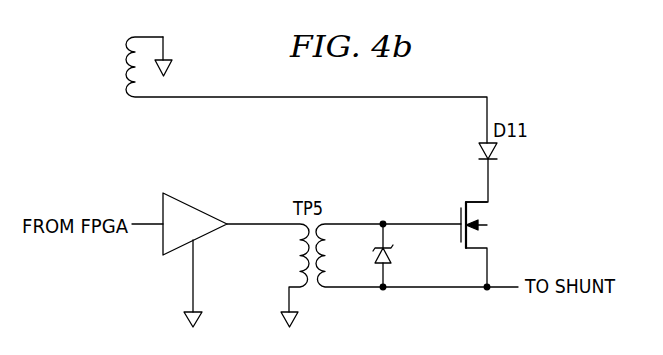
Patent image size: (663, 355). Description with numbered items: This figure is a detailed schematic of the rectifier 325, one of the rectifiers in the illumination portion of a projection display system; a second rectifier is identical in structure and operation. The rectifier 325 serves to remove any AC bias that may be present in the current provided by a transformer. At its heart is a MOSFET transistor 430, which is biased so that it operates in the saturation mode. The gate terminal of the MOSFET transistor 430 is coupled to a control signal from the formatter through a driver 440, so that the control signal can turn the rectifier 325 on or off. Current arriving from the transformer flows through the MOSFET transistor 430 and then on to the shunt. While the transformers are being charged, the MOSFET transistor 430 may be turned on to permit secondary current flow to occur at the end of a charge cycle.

The rectifier 325 is at (495, 75).
The MOSFET transistor Q7 430 is at (458, 217).
The driver 440 is at (190, 201).